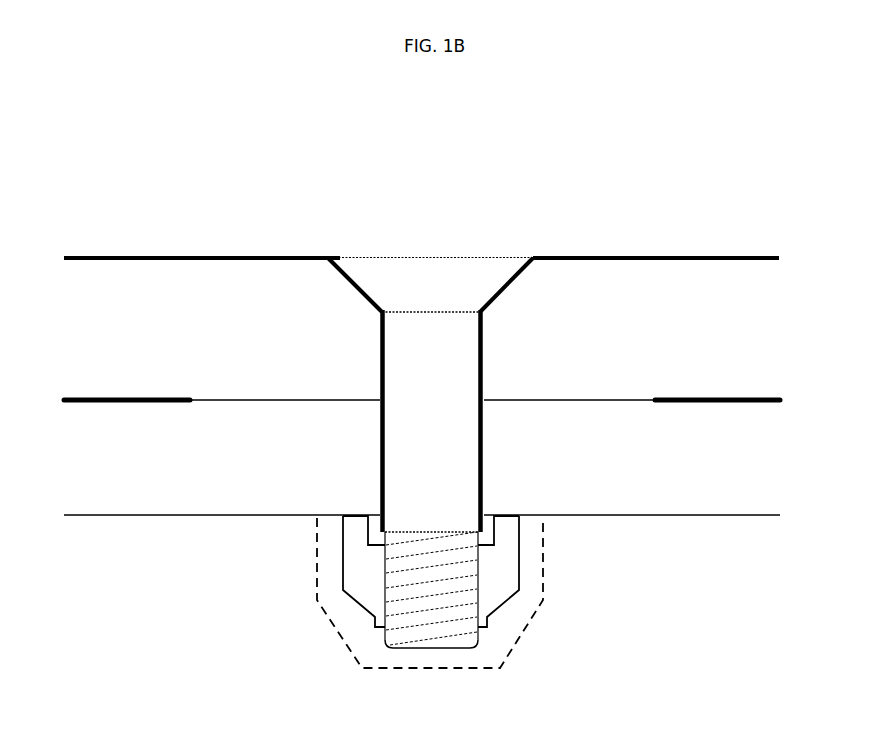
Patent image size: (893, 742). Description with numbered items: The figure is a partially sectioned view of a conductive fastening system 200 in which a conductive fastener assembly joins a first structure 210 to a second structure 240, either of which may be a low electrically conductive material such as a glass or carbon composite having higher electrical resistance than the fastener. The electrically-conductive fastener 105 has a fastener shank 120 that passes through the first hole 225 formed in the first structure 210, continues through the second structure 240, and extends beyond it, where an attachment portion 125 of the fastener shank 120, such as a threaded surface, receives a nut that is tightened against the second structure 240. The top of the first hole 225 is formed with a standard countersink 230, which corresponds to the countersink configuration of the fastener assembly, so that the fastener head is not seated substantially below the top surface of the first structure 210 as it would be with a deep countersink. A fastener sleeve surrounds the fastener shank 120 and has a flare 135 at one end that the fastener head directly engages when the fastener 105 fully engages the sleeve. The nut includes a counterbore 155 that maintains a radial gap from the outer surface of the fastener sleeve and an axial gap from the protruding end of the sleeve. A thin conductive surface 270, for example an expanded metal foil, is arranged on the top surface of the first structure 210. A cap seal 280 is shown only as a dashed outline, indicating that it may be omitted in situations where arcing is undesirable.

The conductive fastener system 200 is at (420, 146).
The conductive surface 270 is at (205, 255).
The first structure 210 is at (645, 326).
The second structure 240 is at (585, 456).
The fastener 105 is at (448, 255).
The flare 135 is at (335, 256).
The standard countersink 230 is at (385, 293).
The first hole 225 is at (379, 373).
The fastener shank 120 is at (450, 405).
The attachment portion 125 is at (448, 620).
The counterbore 155 is at (368, 571).
The cap seal 280 is at (520, 622).